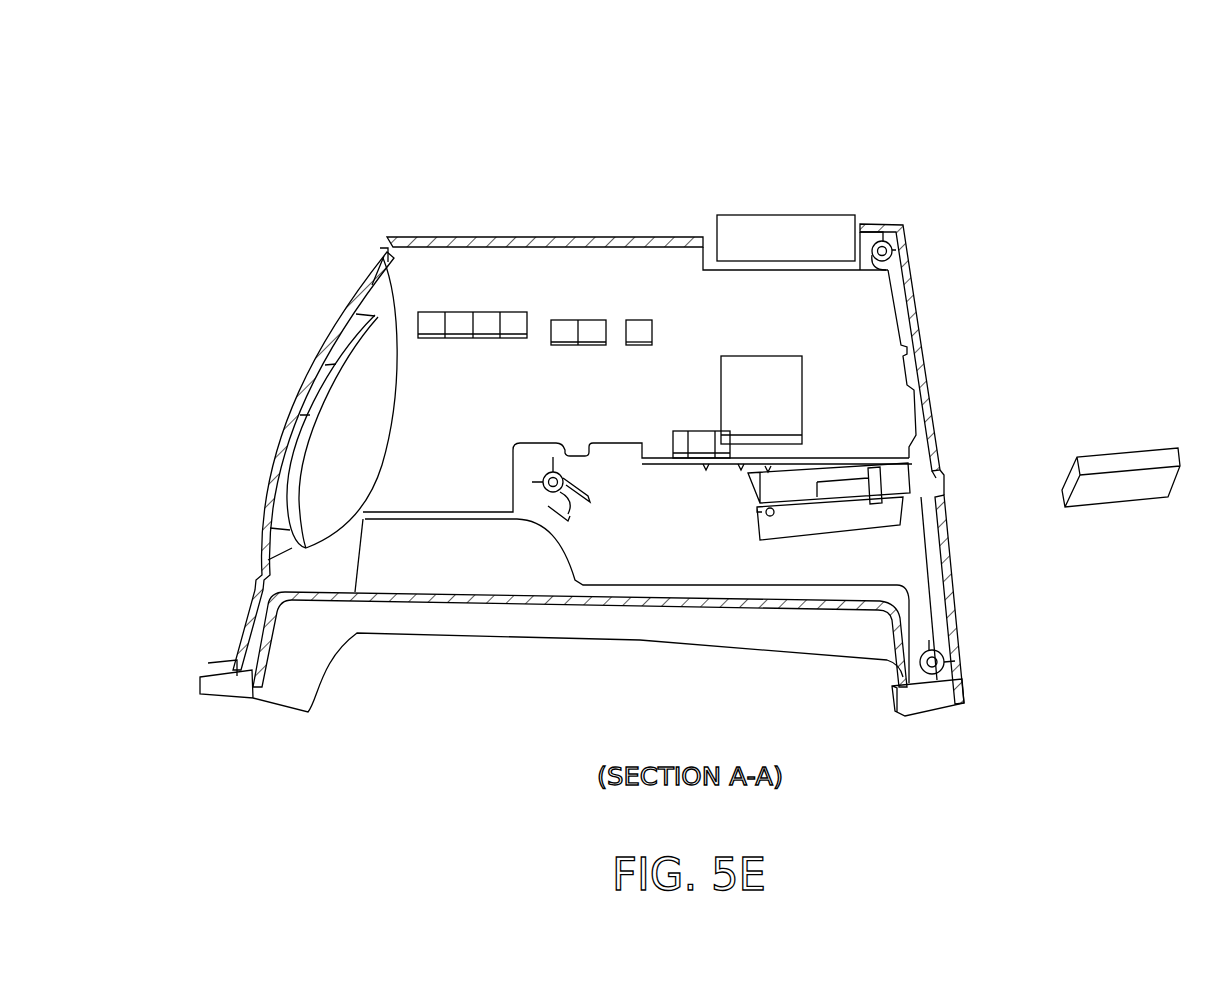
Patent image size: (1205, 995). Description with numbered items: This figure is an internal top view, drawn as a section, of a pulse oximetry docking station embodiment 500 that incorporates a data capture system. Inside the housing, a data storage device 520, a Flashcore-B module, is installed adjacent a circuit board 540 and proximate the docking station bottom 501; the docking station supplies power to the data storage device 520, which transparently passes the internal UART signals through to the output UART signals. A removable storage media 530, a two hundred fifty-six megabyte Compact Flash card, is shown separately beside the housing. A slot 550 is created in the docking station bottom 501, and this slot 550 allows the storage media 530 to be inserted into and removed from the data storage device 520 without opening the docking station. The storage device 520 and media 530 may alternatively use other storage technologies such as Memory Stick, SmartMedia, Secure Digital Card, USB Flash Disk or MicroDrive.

The docking station embodiment 500 is at (669, 62).
The docking station bottom 501 is at (996, 575).
The data storage device 520 is at (866, 519).
The removable storage media 530 is at (1112, 450).
The circuit board 540 is at (386, 250).
The slot 550 is at (943, 485).